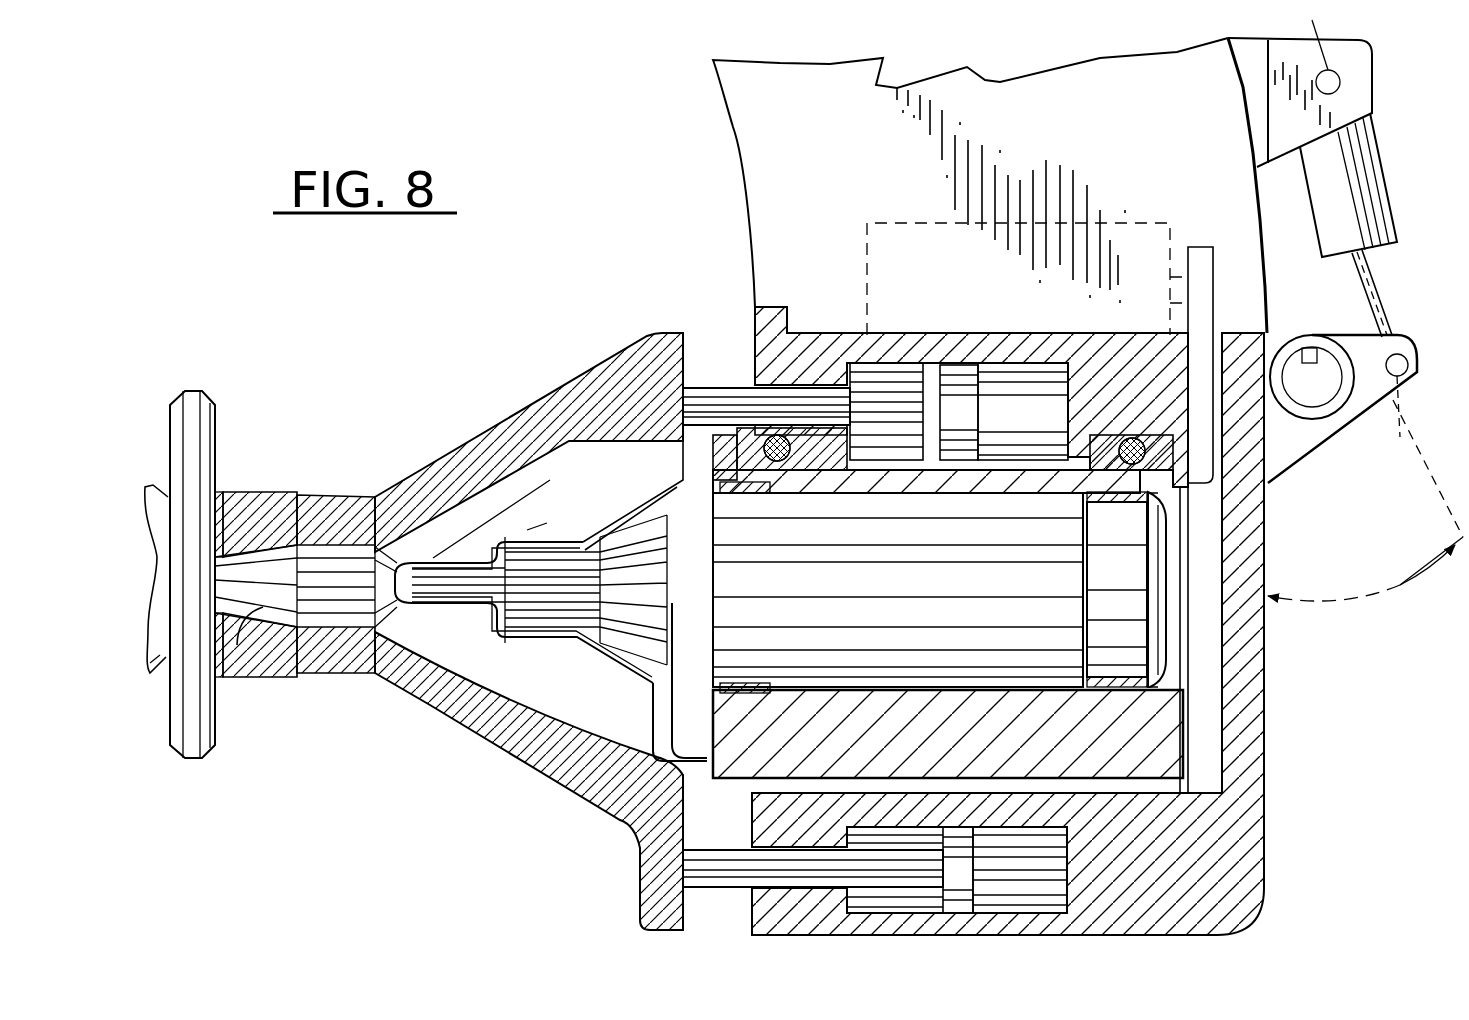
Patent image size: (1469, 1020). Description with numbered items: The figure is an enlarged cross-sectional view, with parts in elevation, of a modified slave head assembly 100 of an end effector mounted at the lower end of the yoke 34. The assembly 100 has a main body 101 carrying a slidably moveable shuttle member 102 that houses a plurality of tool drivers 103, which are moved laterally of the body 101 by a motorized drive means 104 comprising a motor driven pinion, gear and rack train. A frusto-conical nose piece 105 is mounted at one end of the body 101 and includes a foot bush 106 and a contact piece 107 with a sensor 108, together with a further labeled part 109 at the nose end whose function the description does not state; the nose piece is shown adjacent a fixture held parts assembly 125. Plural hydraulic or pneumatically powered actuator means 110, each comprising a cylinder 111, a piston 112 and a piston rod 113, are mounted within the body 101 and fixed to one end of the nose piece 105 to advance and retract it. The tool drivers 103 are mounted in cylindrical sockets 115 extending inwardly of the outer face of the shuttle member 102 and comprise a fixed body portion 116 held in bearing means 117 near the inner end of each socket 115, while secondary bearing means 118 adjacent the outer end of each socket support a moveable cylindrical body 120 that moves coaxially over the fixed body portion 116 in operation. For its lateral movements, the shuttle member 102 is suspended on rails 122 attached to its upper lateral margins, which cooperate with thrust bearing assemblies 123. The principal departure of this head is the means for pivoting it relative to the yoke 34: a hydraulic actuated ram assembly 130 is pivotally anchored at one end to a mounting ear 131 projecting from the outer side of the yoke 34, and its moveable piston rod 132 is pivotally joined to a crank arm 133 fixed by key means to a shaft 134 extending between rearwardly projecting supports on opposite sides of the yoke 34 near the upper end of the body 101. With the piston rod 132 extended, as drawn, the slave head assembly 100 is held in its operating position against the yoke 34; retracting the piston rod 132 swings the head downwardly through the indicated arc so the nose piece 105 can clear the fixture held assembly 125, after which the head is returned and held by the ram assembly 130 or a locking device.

The yoke 34 is at (730, 137).
The slave head assembly 100 is at (693, 303).
The main body 101 is at (1264, 797).
The shuttle member 102 is at (1143, 747).
The tool drivers 103 is at (873, 551).
The motorized drive means 104 is at (1127, 217).
The frusto-conical nose piece 105 is at (512, 424).
The foot bush 106 is at (325, 498).
The contact piece 107 is at (238, 495).
The sensor 108 is at (222, 490).
The hub flange 109 is at (237, 648).
The actuator means 110 is at (1020, 355).
The cylinder 111 is at (1030, 419).
The piston 112 is at (960, 380).
The piston rod 113 is at (905, 390).
The cylindrical sockets 115 is at (1173, 580).
The fixed body portion 116 is at (1127, 530).
The bearing means 117 is at (1160, 505).
The secondary bearing means 118 is at (653, 672).
The moveable cylindrical body 120 is at (1087, 607).
The rails 122 is at (1130, 447).
The thrust bearing assemblies 123 is at (1147, 452).
The parts assembly 125 is at (188, 392).
The hydraulic actuated ram assembly 130 is at (1385, 153).
The mounting ear 131 is at (1372, 57).
The piston rod 132 is at (1390, 297).
The crank arm 133 is at (1410, 368).
The shaft 134 is at (1303, 337).